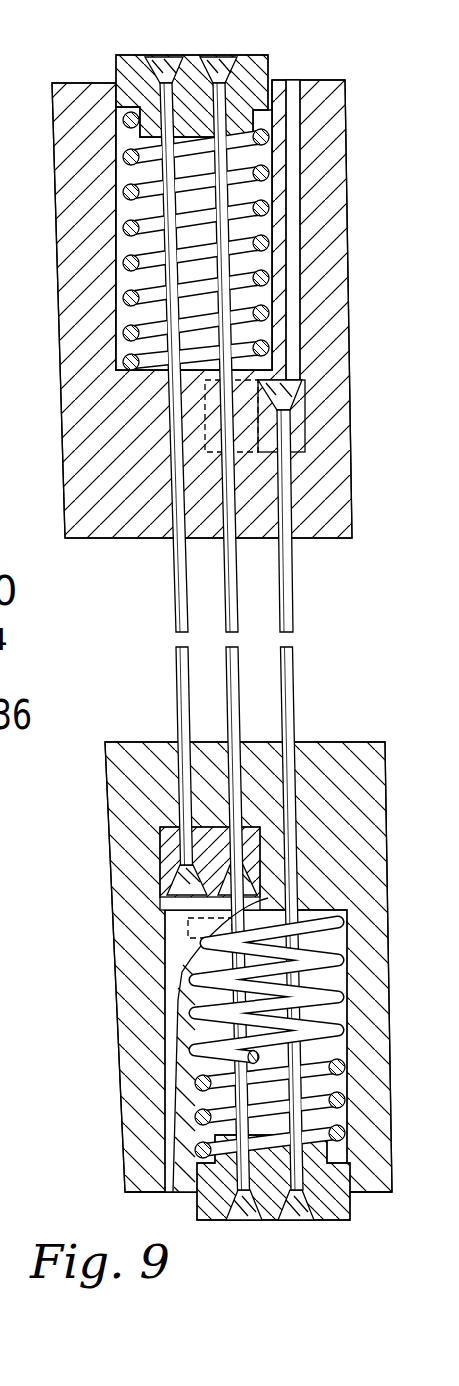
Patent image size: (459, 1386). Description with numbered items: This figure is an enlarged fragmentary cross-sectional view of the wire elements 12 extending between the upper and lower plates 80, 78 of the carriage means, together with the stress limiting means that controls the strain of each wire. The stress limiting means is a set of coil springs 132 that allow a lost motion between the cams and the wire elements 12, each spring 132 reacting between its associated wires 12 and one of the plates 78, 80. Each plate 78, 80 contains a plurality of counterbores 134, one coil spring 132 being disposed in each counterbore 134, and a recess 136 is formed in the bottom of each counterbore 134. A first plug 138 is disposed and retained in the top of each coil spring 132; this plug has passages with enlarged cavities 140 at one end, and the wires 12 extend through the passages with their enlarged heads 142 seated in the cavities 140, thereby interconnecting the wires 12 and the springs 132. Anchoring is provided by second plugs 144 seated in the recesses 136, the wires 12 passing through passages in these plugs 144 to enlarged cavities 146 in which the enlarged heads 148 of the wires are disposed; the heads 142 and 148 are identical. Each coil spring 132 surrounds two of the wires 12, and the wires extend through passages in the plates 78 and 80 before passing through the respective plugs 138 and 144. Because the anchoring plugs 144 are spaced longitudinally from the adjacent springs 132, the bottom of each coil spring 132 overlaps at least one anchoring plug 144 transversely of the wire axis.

The wire element 12 is at (176, 660).
The plate 78 is at (118, 802).
The plate 80 is at (77, 132).
The coil spring 132 is at (128, 237).
The counterbore 134 is at (124, 283).
The recess 136 is at (298, 427).
The first plug 138 is at (267, 55).
The enlarged cavity 140 is at (153, 57).
The enlarged head 142 is at (214, 57).
The second plug 144 is at (300, 495).
The cavity 146 is at (297, 398).
The enlarged head 148 is at (305, 348).